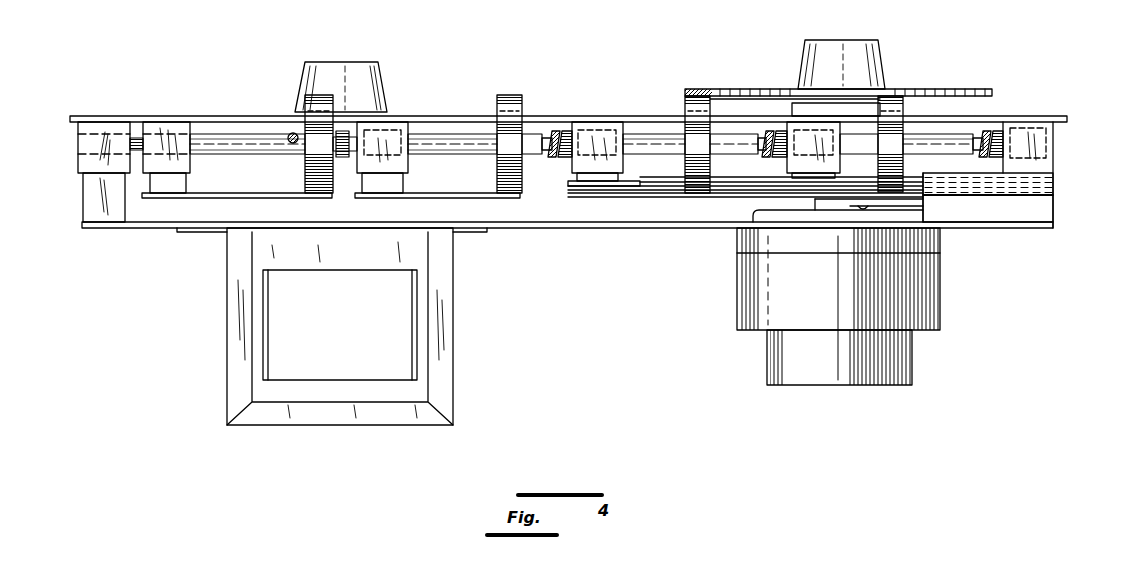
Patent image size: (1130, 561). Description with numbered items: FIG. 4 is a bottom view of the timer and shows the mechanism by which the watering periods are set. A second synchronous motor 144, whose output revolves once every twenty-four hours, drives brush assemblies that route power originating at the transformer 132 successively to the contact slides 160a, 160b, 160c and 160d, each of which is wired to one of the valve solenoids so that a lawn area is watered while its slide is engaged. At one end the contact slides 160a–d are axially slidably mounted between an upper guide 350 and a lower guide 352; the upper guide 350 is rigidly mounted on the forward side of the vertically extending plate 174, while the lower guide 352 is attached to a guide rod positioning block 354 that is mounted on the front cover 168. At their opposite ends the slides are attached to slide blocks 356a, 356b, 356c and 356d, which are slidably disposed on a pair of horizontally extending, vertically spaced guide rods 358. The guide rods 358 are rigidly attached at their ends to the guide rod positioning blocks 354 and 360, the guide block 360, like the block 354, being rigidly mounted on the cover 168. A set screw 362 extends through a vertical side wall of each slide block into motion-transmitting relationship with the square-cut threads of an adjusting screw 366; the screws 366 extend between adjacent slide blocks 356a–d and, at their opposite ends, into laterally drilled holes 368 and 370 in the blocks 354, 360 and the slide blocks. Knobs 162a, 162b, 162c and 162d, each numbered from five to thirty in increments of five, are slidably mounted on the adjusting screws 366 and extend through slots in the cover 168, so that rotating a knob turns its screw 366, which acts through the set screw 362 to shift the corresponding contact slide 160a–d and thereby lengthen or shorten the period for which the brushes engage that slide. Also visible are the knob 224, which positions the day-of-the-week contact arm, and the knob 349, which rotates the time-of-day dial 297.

The transformer 132 is at (348, 328).
The second synchronous motor 144 is at (740, 298).
The contact slide 160a is at (723, 185).
The contact slide 160b is at (629, 190).
The contact slide 160c is at (446, 195).
The contact slide 160d is at (254, 198).
The knob 162a is at (892, 100).
The knob 162b is at (695, 95).
The knob 162c is at (500, 96).
The knob 162d is at (305, 86).
The front cover 168 is at (1035, 104).
The vertically extending plate 174 is at (588, 228).
The knob 224 is at (362, 92).
The dial 297 is at (957, 89).
The knob 349 is at (834, 52).
The upper guide 350 is at (1040, 217).
The lower guide 352 is at (1020, 200).
The guide rod positioning block 354 is at (1048, 150).
The slide block 356a is at (786, 163).
The slide block 356b is at (585, 170).
The slide block 356c is at (372, 170).
The slide block 356d is at (190, 158).
The guide rod 358 is at (290, 134).
The guide rod positioning block 360 is at (80, 172).
The set screw 362 is at (1018, 160).
The adjusting screw 366 is at (213, 125).
The laterally drilled hole 368 is at (580, 122).
The laterally drilled hole 370 is at (620, 122).